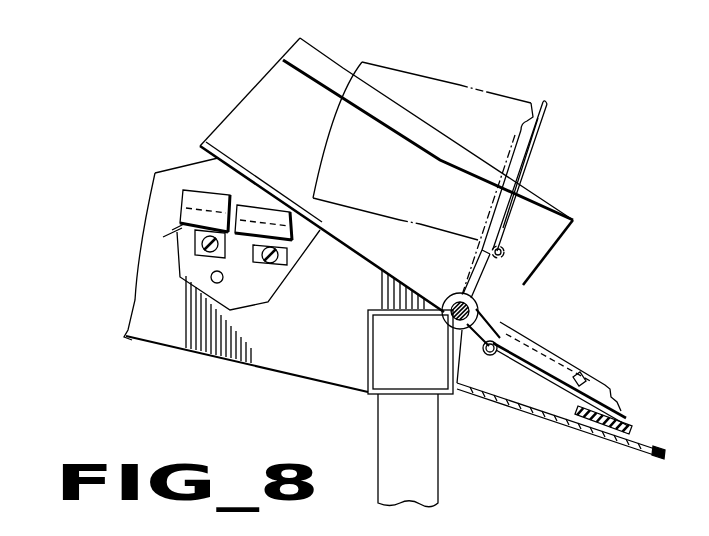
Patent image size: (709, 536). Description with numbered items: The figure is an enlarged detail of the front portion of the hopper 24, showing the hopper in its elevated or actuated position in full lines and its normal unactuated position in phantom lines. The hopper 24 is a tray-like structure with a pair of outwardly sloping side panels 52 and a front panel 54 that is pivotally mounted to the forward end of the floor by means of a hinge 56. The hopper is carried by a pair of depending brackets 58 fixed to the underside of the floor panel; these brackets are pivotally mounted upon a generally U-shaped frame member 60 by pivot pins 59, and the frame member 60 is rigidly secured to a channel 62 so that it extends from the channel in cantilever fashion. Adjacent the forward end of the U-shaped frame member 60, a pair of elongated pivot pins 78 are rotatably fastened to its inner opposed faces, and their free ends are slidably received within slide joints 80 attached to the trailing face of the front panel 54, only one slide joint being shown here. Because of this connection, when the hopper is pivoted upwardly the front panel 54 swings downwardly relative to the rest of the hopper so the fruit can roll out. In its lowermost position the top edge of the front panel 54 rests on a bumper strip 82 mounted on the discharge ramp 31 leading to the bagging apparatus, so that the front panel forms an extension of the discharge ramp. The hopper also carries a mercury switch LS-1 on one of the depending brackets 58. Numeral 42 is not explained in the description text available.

The hopper 24 is at (352, 63).
The side panels 52 is at (320, 87).
The front panel 54 is at (545, 130).
The slide joints 80 is at (510, 153).
The pivot pins 78 is at (470, 254).
The hinge 56 is at (493, 344).
The bumper strip 82 is at (637, 420).
The discharge ramp 31 is at (656, 448).
The channel 62 is at (368, 372).
The mounting plate 42 is at (122, 331).
The U-shaped frame member 60 is at (282, 362).
The mercury switch LS-1 is at (205, 185).
The depending brackets 58 is at (280, 285).
The pivot pins 59 is at (221, 282).